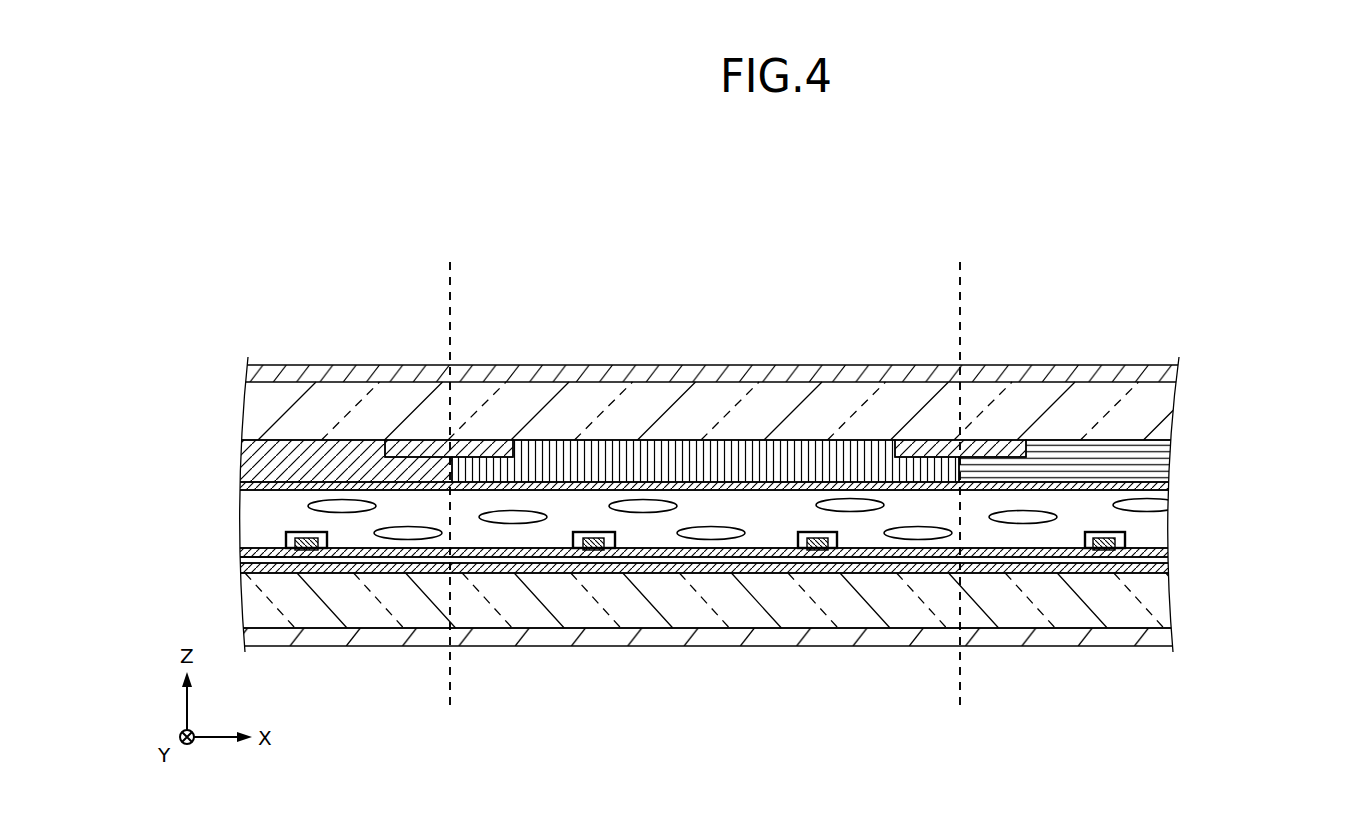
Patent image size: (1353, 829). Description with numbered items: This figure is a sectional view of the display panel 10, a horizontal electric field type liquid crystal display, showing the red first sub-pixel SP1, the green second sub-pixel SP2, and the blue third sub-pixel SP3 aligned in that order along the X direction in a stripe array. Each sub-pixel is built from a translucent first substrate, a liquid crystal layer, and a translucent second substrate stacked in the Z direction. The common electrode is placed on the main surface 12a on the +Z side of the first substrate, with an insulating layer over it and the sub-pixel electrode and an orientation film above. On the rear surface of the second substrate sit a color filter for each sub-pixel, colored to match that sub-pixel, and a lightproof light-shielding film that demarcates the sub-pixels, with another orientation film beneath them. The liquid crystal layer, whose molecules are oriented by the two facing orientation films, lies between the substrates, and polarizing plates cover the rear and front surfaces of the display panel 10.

The display panel 10 is at (744, 484).
The main surface 12a is at (262, 550).
The first sub-pixel SP1 is at (368, 222).
The second sub-pixel SP2 is at (705, 452).
The third sub-pixel SP3 is at (1047, 452).